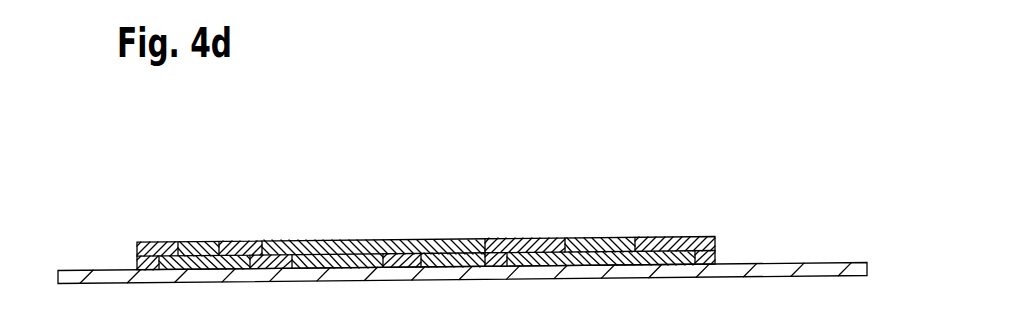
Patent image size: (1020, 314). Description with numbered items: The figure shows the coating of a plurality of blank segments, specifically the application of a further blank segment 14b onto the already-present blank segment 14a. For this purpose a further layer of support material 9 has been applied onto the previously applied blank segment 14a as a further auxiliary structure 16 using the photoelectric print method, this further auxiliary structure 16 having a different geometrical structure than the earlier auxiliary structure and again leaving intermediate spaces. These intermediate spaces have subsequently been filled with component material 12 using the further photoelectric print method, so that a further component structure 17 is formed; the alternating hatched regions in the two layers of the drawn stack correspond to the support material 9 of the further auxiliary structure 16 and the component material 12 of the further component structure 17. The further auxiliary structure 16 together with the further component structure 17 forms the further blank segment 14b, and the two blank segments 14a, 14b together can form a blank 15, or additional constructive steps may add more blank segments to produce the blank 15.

The support material 9 is at (418, 216).
The further auxiliary structure 16 is at (150, 243).
The component material 12 is at (427, 199).
The further component structure 17 is at (198, 243).
The blank segment 14a is at (744, 248).
The further blank segment 14b is at (126, 236).
The blank 15 is at (440, 189).